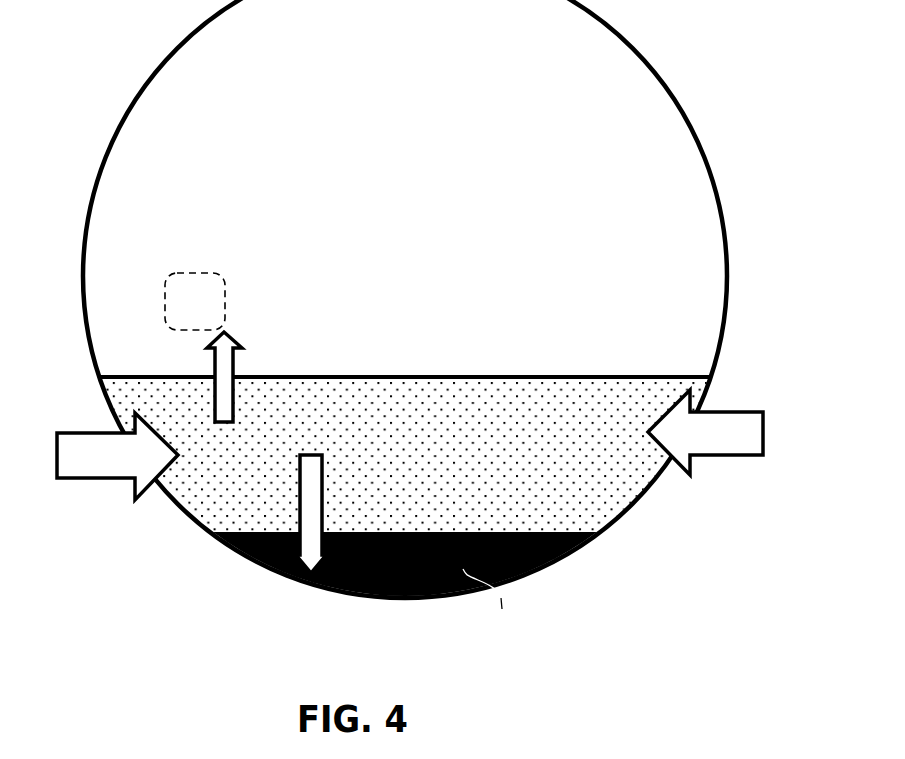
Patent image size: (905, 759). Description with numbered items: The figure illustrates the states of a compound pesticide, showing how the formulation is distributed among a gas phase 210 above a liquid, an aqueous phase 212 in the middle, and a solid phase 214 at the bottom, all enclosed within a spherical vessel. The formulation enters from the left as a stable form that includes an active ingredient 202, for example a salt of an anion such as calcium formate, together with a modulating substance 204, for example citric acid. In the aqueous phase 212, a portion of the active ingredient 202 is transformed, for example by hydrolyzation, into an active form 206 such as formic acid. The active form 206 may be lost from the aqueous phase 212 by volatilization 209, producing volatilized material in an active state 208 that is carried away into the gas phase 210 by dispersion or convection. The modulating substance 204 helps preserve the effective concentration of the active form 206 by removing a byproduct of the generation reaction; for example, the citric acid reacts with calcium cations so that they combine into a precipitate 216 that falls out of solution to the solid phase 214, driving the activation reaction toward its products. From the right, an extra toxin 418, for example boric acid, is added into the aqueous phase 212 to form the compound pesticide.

The gas phase 210 is at (190, 85).
The active state 208 is at (226, 300).
The volatilization 209 is at (238, 366).
The active form 206 is at (372, 423).
The aqueous phase 212 is at (567, 493).
The solid phase 214 is at (405, 598).
The precipitate 216 is at (485, 593).
The active ingredient 202 is at (76, 479).
The modulating substance 204 is at (126, 479).
The extra toxin 418 is at (743, 407).